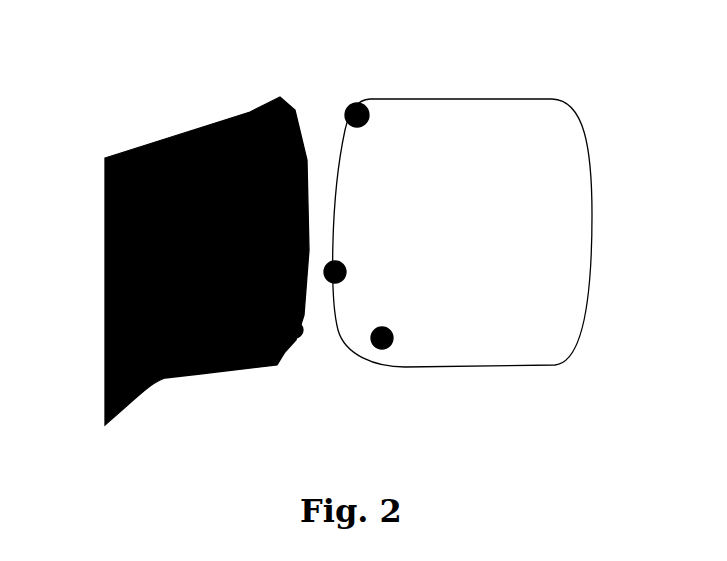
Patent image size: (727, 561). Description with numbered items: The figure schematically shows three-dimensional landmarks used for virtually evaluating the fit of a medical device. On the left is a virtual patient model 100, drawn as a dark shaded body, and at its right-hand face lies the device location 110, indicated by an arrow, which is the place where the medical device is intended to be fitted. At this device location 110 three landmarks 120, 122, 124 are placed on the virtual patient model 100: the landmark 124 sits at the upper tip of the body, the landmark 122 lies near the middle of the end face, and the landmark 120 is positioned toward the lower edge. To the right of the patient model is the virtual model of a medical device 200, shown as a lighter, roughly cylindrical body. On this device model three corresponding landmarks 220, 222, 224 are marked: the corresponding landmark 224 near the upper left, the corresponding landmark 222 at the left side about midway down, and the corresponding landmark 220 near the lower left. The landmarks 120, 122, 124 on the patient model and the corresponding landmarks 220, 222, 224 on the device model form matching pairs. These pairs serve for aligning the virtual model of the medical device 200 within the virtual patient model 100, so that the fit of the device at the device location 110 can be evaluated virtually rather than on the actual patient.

The virtual patient model 100 is at (142, 287).
The device location 110 is at (297, 85).
The landmark 120 is at (297, 348).
The landmark 122 is at (250, 275).
The landmark 124 is at (270, 106).
The virtual model of a medical device 200 is at (522, 142).
The corresponding landmark 220 is at (390, 330).
The corresponding landmark 222 is at (342, 268).
The corresponding landmark 224 is at (362, 106).